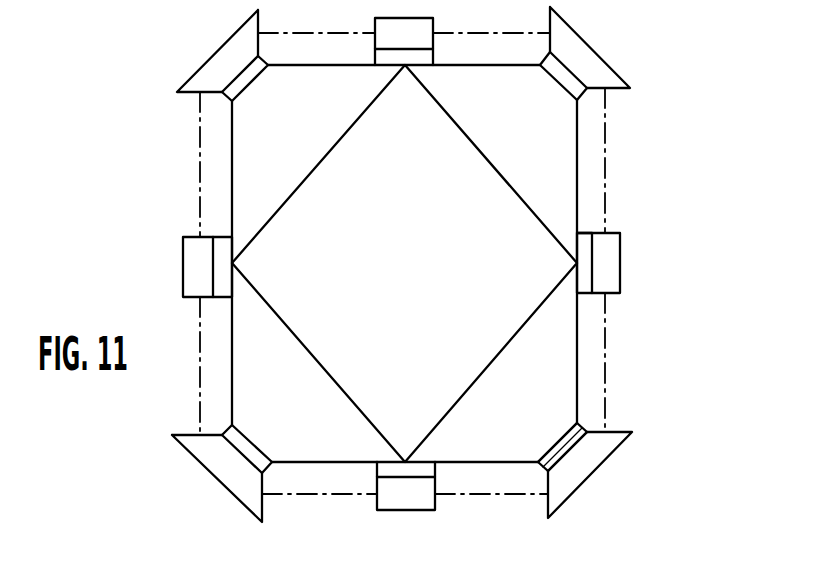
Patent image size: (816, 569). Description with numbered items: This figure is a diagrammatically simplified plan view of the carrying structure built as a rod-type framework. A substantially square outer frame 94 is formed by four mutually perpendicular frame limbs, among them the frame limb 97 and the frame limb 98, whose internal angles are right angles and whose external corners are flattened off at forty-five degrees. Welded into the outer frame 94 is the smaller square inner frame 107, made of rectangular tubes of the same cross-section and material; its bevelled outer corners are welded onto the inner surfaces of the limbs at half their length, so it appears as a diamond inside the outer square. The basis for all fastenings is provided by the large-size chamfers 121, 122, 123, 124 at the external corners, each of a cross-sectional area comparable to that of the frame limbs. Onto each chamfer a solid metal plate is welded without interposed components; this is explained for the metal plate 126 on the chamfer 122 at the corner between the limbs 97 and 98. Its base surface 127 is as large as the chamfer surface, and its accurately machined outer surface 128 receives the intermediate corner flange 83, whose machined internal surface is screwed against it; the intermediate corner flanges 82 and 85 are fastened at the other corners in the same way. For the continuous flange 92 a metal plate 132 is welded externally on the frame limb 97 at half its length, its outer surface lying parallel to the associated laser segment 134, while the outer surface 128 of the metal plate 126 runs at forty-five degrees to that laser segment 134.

The intermediate corner flange 82 is at (609, 59).
The intermediate corner flange 83 is at (606, 473).
The intermediate corner flange 85 is at (204, 59).
The continuous flange 92 is at (622, 262).
The outer frame 94 is at (230, 200).
The frame limb 97 is at (580, 348).
The frame limb 98 is at (500, 463).
The inner frame 107 is at (353, 129).
The chamfer 121 is at (549, 80).
The chamfer 122 is at (561, 441).
The chamfer 123 is at (253, 438).
The chamfer 124 is at (256, 84).
The metal plate 126 is at (587, 419).
The base surface 127 is at (571, 454).
The outer surface 128 is at (583, 435).
The metal plate 132 is at (585, 236).
The laser segment 134 is at (607, 155).